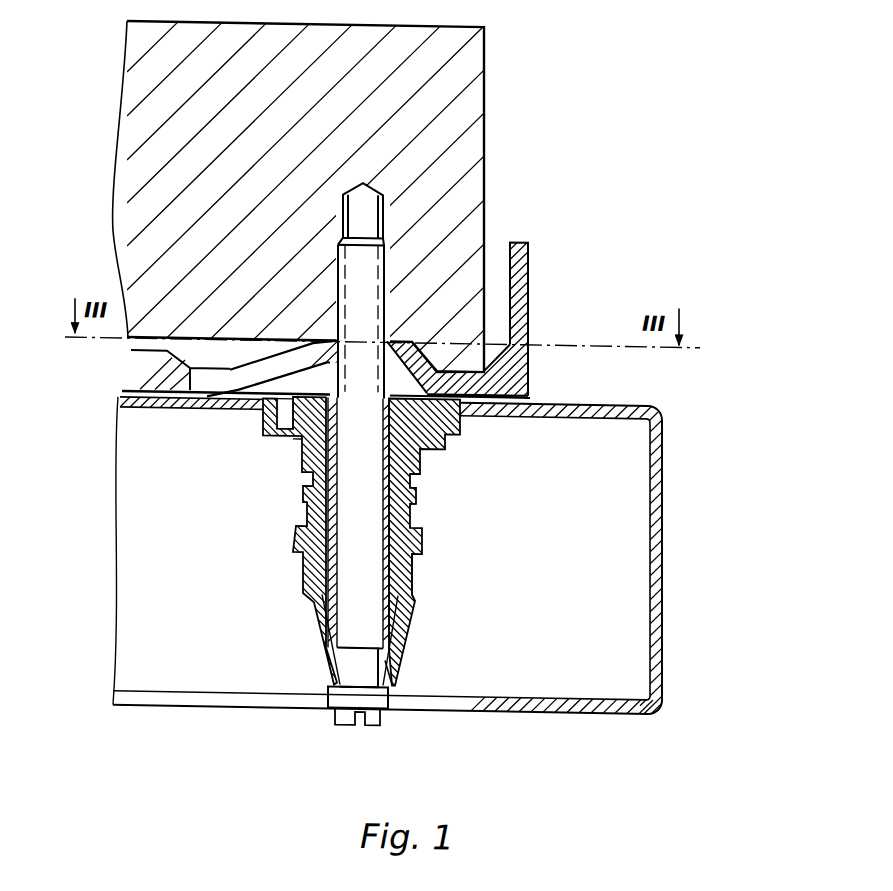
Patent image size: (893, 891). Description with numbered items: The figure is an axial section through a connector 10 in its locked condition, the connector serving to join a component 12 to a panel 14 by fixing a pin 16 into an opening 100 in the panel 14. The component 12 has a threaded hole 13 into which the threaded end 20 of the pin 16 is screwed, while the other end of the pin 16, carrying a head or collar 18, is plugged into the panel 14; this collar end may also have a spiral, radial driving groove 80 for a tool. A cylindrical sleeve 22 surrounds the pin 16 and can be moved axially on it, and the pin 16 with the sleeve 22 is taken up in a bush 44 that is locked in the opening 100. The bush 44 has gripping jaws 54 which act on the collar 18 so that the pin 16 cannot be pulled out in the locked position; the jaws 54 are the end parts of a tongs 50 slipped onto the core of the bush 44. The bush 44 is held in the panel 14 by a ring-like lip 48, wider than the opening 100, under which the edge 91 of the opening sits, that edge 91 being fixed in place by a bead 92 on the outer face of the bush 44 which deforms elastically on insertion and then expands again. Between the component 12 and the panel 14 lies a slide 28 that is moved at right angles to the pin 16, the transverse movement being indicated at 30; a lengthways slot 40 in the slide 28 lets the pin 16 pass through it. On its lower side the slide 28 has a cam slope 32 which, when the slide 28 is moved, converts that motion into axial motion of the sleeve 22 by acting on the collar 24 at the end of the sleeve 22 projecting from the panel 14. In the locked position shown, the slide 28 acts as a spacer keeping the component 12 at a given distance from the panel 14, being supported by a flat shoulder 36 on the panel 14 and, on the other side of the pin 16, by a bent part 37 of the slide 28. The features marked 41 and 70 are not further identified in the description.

The connector 10 is at (637, 365).
The component 12 is at (458, 73).
The threaded hole 13 is at (387, 204).
The panel 14 is at (520, 702).
The pin 16 is at (348, 590).
The collar 18 is at (377, 693).
The threaded end 20 is at (335, 268).
The cylindrical sleeve 22 is at (305, 549).
The collar 24 is at (253, 414).
The slide 28 is at (518, 259).
The direction of motion 30 is at (644, 274).
The cam slope 32 is at (262, 350).
The shoulder 36 is at (187, 416).
The bent part 37 is at (453, 380).
The lengthways slot 40 is at (230, 382).
The inner surface 41 is at (443, 462).
The bush 44 is at (430, 491).
The ring-like lip 48 is at (460, 435).
The tongs 50 is at (413, 602).
The gripping jaws 54 is at (390, 681).
The cone 70 is at (333, 673).
The driving groove 80 is at (362, 723).
The edge 91 is at (318, 473).
The bead 92 is at (417, 492).
The opening 100 is at (296, 469).